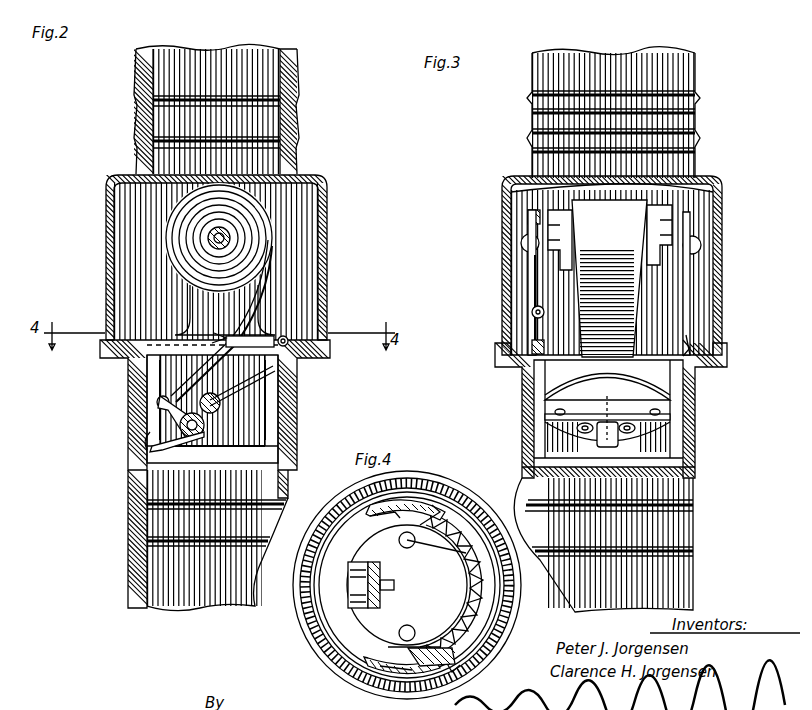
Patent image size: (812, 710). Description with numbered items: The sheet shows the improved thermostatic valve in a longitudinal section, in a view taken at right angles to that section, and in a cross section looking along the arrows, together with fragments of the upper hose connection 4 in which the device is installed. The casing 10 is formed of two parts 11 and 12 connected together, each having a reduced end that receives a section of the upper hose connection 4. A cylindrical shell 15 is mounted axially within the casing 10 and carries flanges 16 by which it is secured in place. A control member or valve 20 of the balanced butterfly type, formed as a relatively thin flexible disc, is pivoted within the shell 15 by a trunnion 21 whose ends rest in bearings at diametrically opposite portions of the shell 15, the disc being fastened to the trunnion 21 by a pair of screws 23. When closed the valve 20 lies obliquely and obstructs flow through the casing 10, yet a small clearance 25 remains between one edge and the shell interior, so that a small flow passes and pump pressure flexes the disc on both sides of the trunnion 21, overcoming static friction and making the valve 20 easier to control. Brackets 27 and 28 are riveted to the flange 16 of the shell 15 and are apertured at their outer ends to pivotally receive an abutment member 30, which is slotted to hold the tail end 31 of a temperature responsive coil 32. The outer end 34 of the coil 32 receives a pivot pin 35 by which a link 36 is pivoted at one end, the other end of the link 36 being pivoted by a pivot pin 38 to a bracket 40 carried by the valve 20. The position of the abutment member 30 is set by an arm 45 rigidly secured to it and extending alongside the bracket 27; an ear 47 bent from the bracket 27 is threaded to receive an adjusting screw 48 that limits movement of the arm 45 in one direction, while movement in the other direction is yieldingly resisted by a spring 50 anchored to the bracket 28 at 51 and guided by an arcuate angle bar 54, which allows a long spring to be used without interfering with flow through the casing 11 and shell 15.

In FIG. 2, the upper hose connection 4 is at (300, 83).
In FIG. 3, the upper hose connection 4 is at (695, 78).
In FIG. 2, the casing 10 is at (355, 238).
In FIG. 2, the casing part 11 is at (326, 268).
In FIG. 4, the casing part 11 is at (497, 600).
In FIG. 2, the casing part 12 is at (278, 452).
In FIG. 3, the casing part 12 is at (693, 480).
In FIG. 2, the cylindrical shell 15 is at (266, 385).
In FIG. 3, the cylindrical shell 15 is at (670, 442).
In FIG. 2, the flanges 16 is at (100, 347).
In FIG. 4, the flanges 16 is at (323, 568).
In FIG. 2, the control member or valve 20 is at (224, 410).
In FIG. 3, the control member or valve 20 is at (560, 395).
In FIG. 4, the control member or valve 20 is at (370, 550).
In FIG. 2, the trunnion 21 is at (262, 440).
In FIG. 3, the trunnion 21 is at (670, 412).
In FIG. 2, the screws 23 is at (218, 408).
In FIG. 3, the screws 23 is at (545, 432).
In FIG. 4, the screws 23 is at (495, 565).
In FIG. 2, the clearance 25 is at (274, 368).
In FIG. 3, the bracket 27 is at (528, 214).
In FIG. 4, the bracket 27 is at (375, 660).
In FIG. 2, the bracket 28 is at (190, 306).
In FIG. 3, the bracket 28 is at (690, 290).
In FIG. 4, the bracket 28 is at (385, 510).
In FIG. 2, the abutment member 30 is at (210, 240).
In FIG. 3, the abutment member 30 is at (522, 241).
In FIG. 2, the tail end 31 is at (205, 250).
In FIG. 2, the temperature responsive coil 32 is at (172, 264).
In FIG. 3, the temperature responsive coil 32 is at (590, 272).
In FIG. 2, the outer end 34 is at (160, 378).
In FIG. 4, the outer end 34 is at (362, 600).
In FIG. 2, the pivot pin 35 is at (166, 404).
In FIG. 2, the link 36 is at (165, 420).
In FIG. 4, the link 36 is at (350, 585).
In FIG. 2, the pivot pin 38 is at (153, 446).
In FIG. 2, the bracket 40 is at (150, 445).
In FIG. 3, the bracket 40 is at (600, 438).
In FIG. 3, the arm 45 is at (530, 296).
In FIG. 4, the arm 45 is at (430, 672).
In FIG. 3, the ear 47 is at (532, 316).
In FIG. 4, the ear 47 is at (475, 655).
In FIG. 3, the adjusting screw 48 is at (530, 348).
In FIG. 4, the adjusting screw 48 is at (455, 656).
In FIG. 2, the spring 50 is at (290, 341).
In FIG. 3, the spring 50 is at (690, 350).
In FIG. 4, the spring 50 is at (432, 512).
In FIG. 3, the anchor 51 is at (695, 352).
In FIG. 4, the anchor 51 is at (375, 516).
In FIG. 2, the arcuate angle bar 54 is at (280, 338).
In FIG. 4, the arcuate angle bar 54 is at (466, 553).